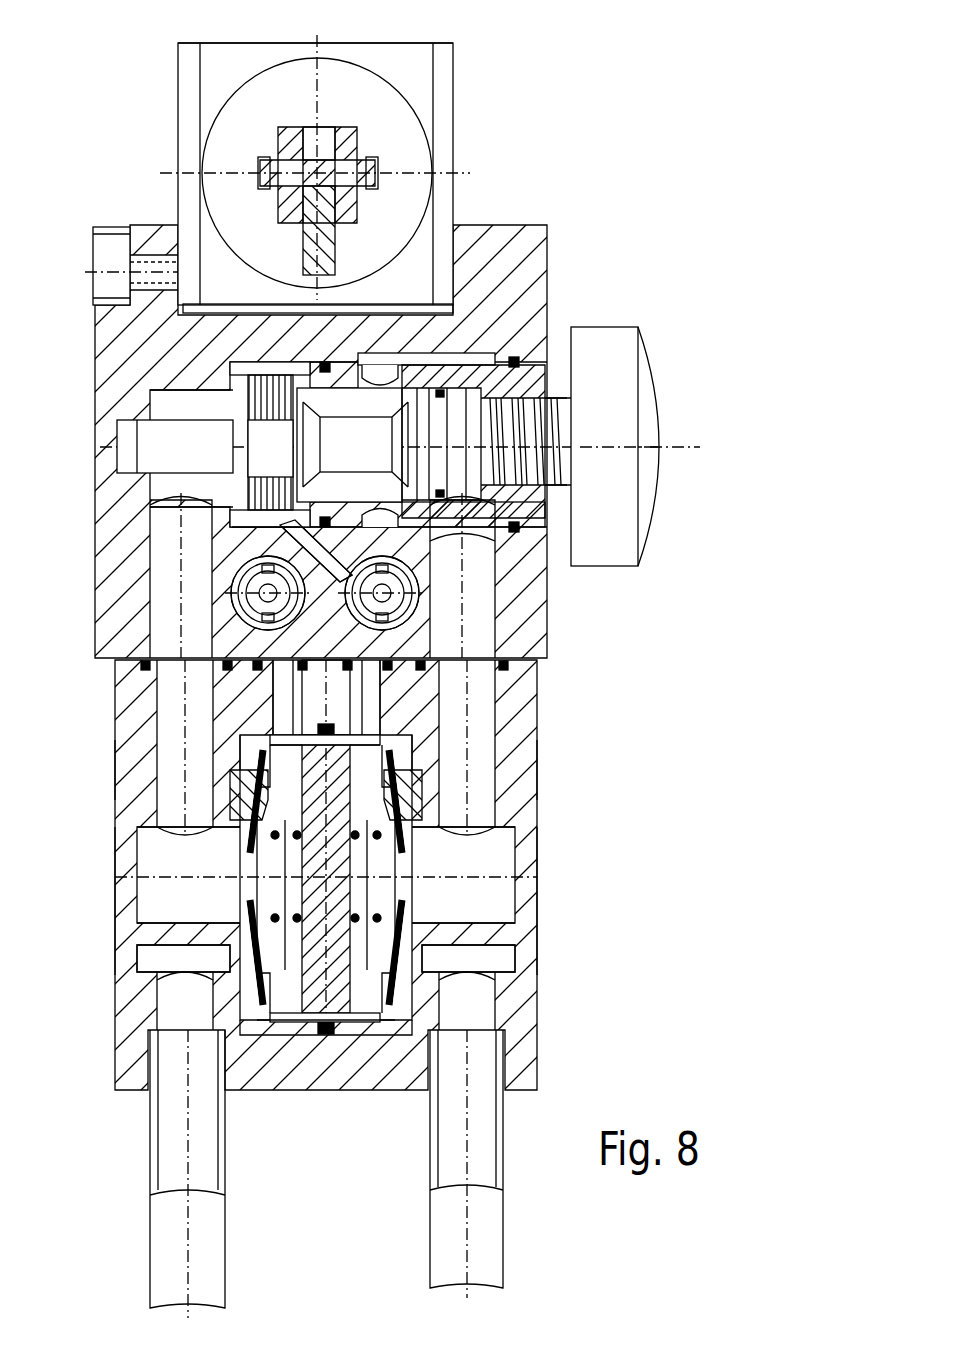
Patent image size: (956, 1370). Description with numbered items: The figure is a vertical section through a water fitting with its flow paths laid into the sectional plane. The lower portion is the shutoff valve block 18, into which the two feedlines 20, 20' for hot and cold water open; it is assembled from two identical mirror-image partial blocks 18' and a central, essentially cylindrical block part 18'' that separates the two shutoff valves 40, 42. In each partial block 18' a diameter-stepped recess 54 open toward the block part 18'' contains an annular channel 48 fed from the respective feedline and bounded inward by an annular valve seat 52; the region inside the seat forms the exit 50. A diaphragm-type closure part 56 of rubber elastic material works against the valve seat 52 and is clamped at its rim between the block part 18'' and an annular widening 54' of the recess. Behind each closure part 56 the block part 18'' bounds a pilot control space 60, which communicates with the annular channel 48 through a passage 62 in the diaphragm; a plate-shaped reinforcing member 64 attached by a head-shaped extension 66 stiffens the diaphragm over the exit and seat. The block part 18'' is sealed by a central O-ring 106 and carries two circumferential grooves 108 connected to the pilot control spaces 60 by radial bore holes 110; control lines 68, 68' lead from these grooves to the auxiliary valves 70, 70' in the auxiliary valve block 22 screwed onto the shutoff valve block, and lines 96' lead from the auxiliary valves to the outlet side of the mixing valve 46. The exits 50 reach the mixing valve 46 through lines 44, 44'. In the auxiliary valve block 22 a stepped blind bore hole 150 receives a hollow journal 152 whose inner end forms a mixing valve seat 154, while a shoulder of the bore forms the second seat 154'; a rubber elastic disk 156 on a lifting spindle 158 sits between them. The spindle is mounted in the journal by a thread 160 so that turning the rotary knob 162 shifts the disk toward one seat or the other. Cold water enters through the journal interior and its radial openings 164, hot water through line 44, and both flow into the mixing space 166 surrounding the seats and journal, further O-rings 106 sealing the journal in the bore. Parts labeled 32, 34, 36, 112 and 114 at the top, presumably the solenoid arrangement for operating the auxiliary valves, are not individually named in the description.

The shutoff valve block 18 is at (282, 875).
The partial block 18' is at (342, 763).
The central block part 18'' is at (326, 1101).
The feedline 20 is at (163, 1174).
The feedline 20' is at (492, 1164).
The auxiliary valve block 22 is at (90, 587).
The actuating assembly 32 is at (490, 78).
The housing 34 is at (378, 46).
The lever 36 is at (358, 232).
The shutoff valve 40 is at (165, 893).
The shutoff valve 42 is at (492, 905).
The line 44 is at (138, 747).
The line 44' is at (529, 747).
The mixing valve 46 is at (612, 304).
The annular channel 48 is at (250, 1022).
The exit 50 is at (250, 870).
The annular valve seat 52 is at (240, 840).
The recess 54 is at (334, 824).
The annular widening 54' is at (328, 770).
The closure part 56 is at (225, 960).
The pilot control space 60 is at (255, 1002).
The passage 62 is at (232, 762).
The reinforcing member 64 is at (226, 862).
The head-shaped extension 66 is at (242, 897).
The control line 68 is at (167, 679).
The control line 68' is at (476, 632).
The auxiliary valve 70 is at (176, 604).
The auxiliary valve 70' is at (521, 591).
The line 96' is at (191, 551).
The O-ring 106 is at (530, 357).
The circumferential groove 108 is at (395, 740).
The bore hole 110 is at (475, 715).
The hub 112 is at (342, 130).
The arm 114 is at (305, 240).
The blind bore hole 150 is at (395, 362).
The journal 152 is at (556, 367).
The mixing valve seat 154 is at (174, 336).
The mixing valve seat 154' is at (171, 430).
The disk 156 is at (263, 388).
The lifting spindle 158 is at (148, 460).
The thread 160 is at (552, 404).
The rotary knob 162 is at (650, 421).
The radial openings 164 is at (481, 357).
The mixing space 166 is at (252, 518).